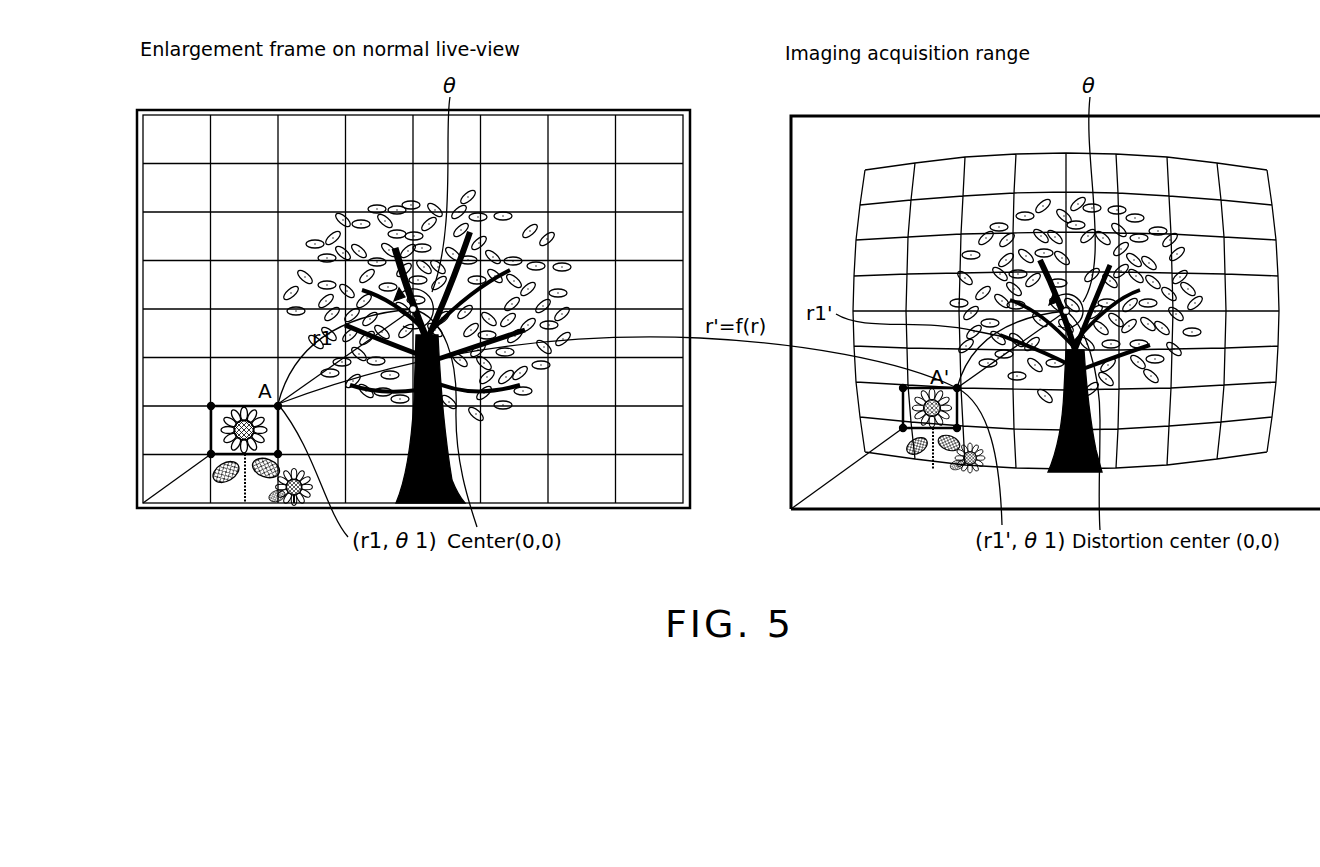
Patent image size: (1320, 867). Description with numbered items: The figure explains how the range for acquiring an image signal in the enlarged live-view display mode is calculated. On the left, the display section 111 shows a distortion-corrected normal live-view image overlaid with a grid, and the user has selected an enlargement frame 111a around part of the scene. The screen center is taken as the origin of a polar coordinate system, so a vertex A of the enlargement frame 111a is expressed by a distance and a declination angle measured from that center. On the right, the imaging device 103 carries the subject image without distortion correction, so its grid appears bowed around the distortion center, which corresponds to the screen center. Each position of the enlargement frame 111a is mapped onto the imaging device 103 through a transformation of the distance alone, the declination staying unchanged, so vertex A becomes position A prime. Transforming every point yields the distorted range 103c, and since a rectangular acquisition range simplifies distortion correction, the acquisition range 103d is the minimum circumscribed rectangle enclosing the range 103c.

The display section 111 is at (640, 110).
The enlargement frame 111a is at (211, 420).
The imaging device 103 is at (1296, 115).
The range of the enlargement frame on the imaging device 103c is at (923, 428).
The acquisition range 103d is at (903, 418).